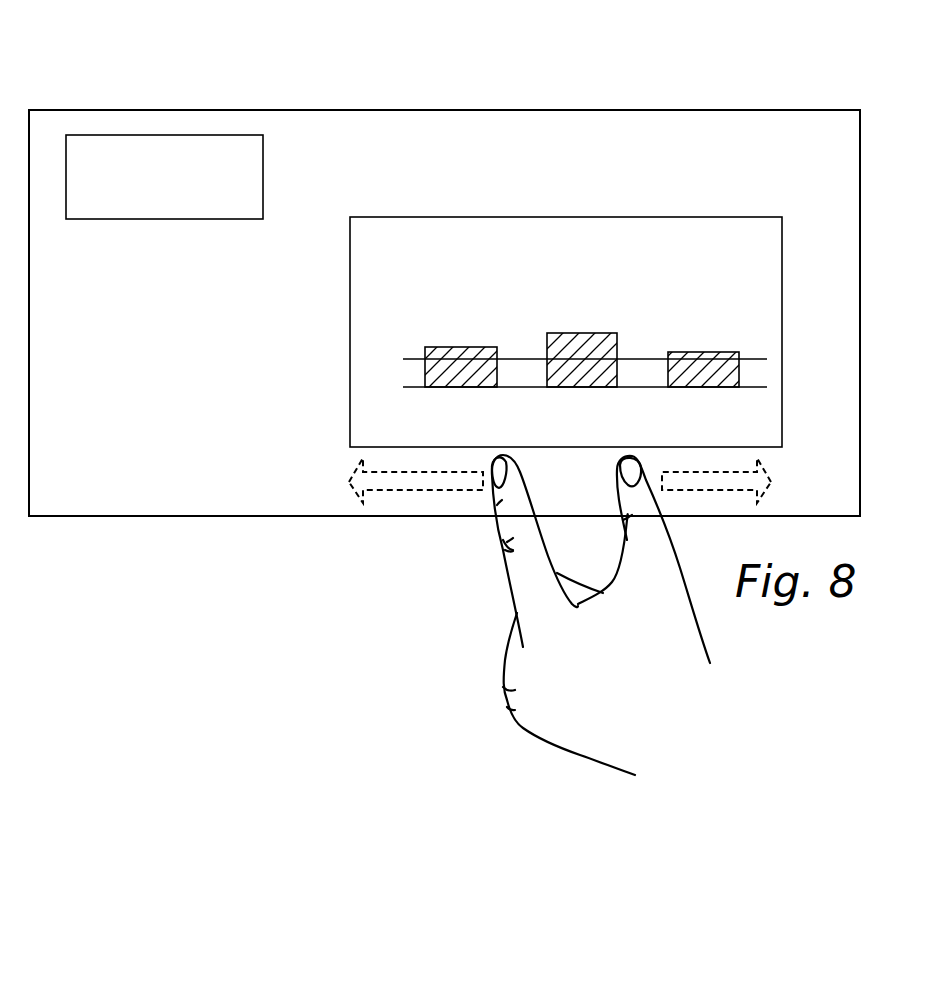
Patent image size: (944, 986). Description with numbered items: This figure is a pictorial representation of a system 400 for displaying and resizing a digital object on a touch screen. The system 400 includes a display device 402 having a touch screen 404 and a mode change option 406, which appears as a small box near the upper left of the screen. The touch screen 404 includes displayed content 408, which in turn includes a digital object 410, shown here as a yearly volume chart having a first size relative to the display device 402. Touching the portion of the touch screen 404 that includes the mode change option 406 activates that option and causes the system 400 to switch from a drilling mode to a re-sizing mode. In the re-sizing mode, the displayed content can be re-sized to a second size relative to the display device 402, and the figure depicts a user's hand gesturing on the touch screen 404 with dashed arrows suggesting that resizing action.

The system 400 is at (183, 72).
The display device 402 is at (318, 108).
The touch screen 404 is at (785, 123).
The mode change option 406 is at (148, 135).
The displayed content 408 is at (622, 183).
The digital object 410 is at (470, 216).